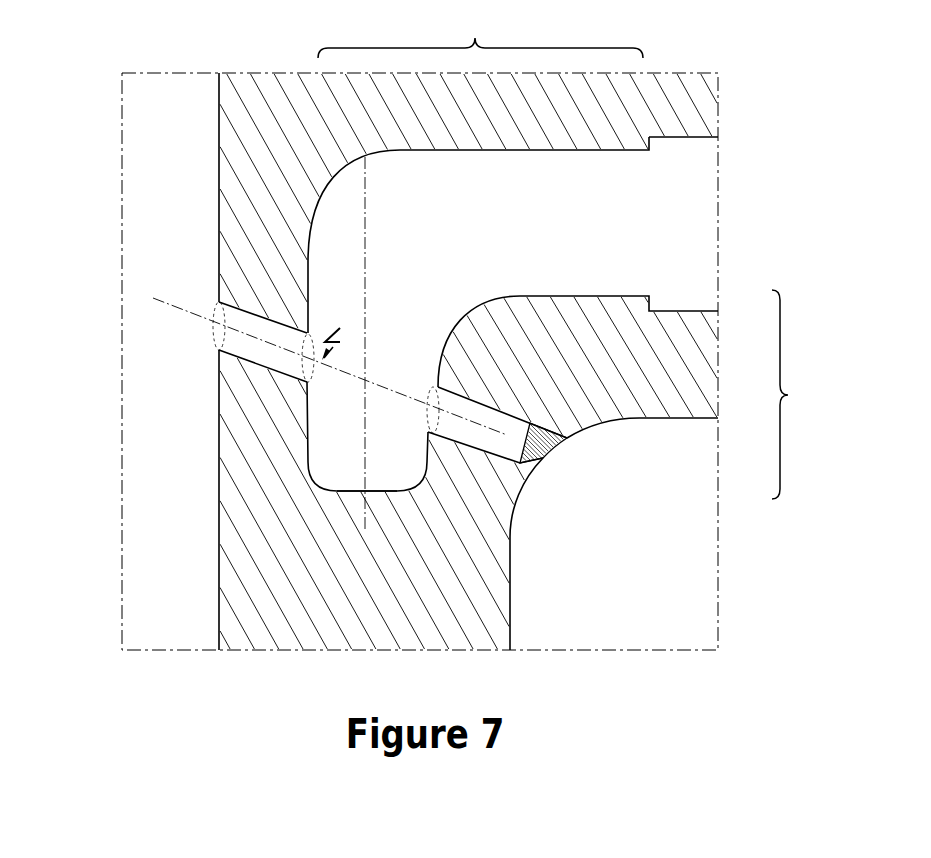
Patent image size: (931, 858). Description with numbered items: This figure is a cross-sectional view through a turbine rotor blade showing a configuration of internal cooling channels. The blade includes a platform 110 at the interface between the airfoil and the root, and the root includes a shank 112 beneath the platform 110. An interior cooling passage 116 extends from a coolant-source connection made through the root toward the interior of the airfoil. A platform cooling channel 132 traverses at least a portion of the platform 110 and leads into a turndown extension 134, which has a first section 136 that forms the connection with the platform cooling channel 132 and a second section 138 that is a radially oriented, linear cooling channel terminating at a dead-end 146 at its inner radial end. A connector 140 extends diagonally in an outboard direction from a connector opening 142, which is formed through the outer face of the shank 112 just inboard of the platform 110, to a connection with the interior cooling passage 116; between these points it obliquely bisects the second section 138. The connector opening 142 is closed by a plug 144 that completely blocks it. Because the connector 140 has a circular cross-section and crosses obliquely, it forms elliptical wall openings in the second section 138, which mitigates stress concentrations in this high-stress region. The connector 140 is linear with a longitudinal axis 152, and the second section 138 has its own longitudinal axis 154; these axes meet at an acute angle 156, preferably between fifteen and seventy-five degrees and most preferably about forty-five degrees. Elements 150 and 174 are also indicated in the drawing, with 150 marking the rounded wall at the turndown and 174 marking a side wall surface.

The platform 110 is at (695, 114).
The shank 112 is at (440, 618).
The interior cooling passage 116 is at (149, 123).
The platform cooling channel 132 is at (667, 232).
The turndown extension 134 is at (409, 265).
The first section 136 is at (574, 230).
The second section 138 is at (317, 447).
The connector 140 is at (257, 358).
The connector opening 142 is at (575, 465).
The plug 144 is at (550, 463).
The dead-end 146 is at (352, 491).
The rounded inlet wall 150 is at (342, 188).
The longitudinal axis 152 is at (175, 306).
The longitudinal axis 154 is at (367, 318).
The acute angle 156 is at (366, 334).
The side wall surface 174 is at (545, 535).